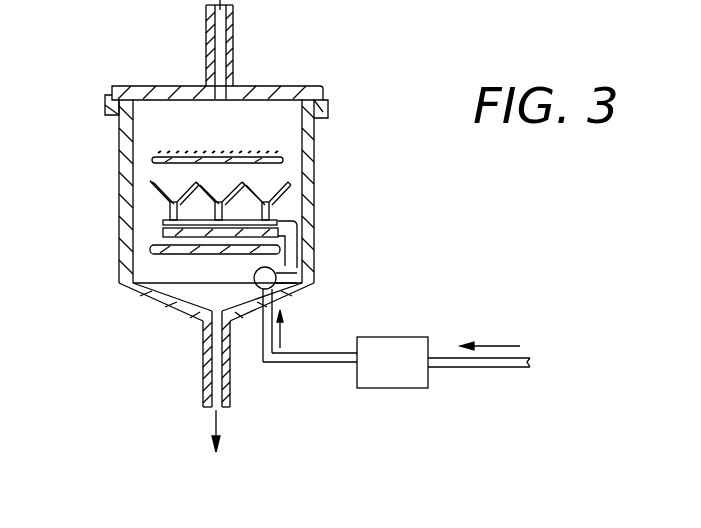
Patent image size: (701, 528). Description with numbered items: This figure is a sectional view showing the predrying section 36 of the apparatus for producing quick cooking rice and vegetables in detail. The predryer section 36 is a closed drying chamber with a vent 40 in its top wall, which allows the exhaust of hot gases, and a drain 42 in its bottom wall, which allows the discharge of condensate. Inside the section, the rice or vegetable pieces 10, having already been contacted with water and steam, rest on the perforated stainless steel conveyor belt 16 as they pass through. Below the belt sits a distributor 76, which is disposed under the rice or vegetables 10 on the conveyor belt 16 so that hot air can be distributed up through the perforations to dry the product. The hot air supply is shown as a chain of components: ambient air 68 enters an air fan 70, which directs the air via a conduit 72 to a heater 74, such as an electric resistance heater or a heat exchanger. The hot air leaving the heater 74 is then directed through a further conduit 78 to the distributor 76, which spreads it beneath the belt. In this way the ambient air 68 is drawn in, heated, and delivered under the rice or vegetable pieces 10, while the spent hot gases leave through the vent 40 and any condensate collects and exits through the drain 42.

The rice or vegetable pieces 10 is at (231, 150).
The perforated stainless steel conveyor belt 16 is at (152, 158).
The predryer section 36 is at (313, 152).
The vent 40 is at (234, 43).
The drain 42 is at (203, 375).
The ambient air 68 is at (500, 347).
The air fan 70 is at (388, 378).
The conduit 72 is at (335, 355).
The heater 74 is at (276, 277).
The distributor 76 is at (272, 228).
The conduit 78 is at (287, 245).